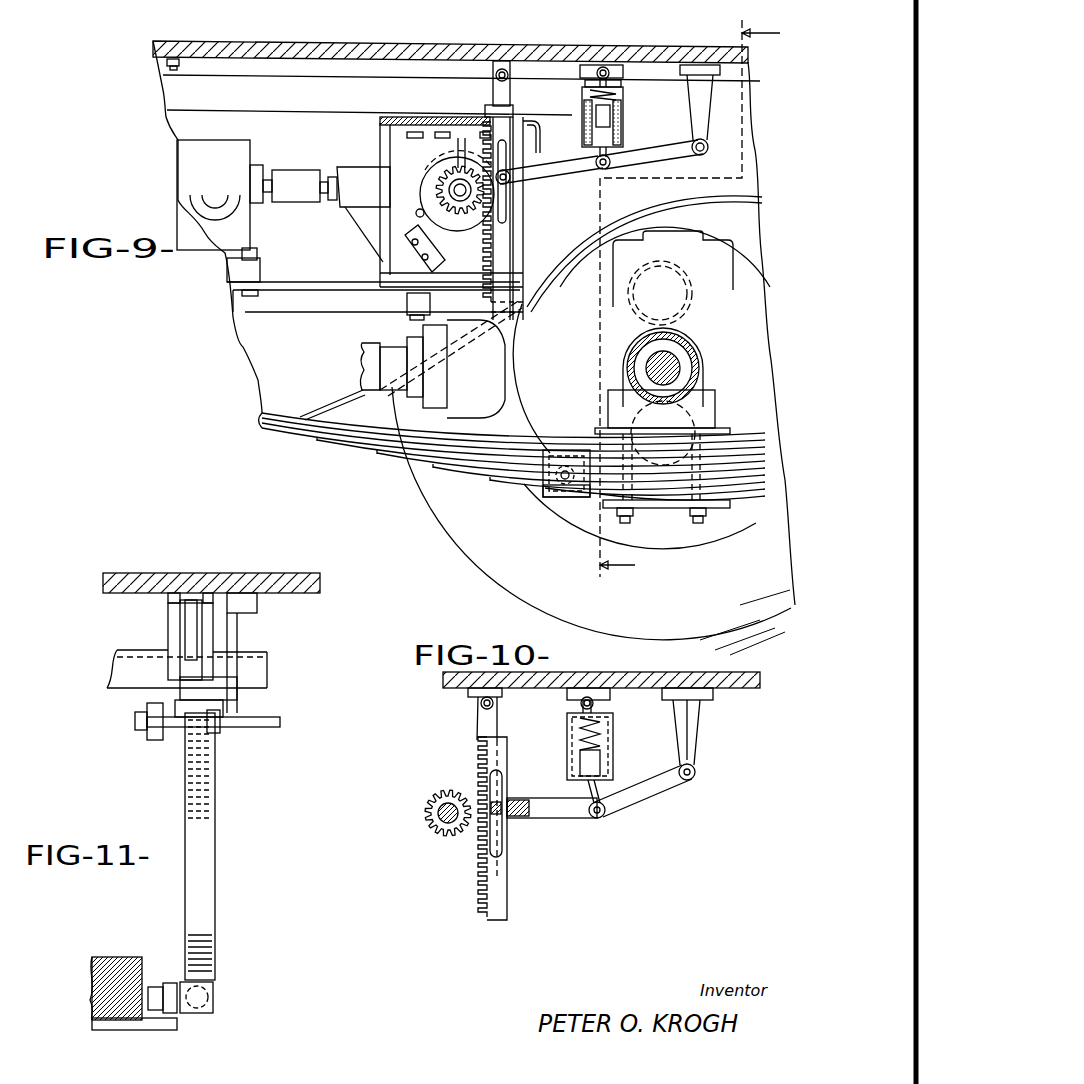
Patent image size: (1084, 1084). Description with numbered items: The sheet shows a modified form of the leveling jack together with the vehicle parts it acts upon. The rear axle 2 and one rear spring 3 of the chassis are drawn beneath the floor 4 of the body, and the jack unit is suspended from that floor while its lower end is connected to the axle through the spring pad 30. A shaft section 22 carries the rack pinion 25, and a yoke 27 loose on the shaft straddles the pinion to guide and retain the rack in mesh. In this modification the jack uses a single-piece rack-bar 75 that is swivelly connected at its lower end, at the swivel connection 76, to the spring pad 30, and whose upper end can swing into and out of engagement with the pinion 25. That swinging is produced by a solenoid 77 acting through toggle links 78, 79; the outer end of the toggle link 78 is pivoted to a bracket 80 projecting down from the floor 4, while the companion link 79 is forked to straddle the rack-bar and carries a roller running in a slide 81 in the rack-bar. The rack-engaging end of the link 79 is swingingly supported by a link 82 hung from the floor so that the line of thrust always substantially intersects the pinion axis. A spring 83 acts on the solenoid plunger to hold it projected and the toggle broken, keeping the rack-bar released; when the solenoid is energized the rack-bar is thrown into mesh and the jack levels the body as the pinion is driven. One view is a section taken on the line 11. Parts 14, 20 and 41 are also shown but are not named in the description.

In FIG. 9, the rear axle 2 is at (680, 365).
In FIG. 9, the rear spring 3 is at (735, 438).
In FIG. 9, the floor 4 is at (378, 50).
In FIG. 10, the floor 4 is at (660, 676).
In FIG. 11, the floor 4 is at (133, 580).
In FIG. 9, the section line 11 is at (690, 301).
In FIG. 9, the motor bracket 14 is at (397, 218).
In FIG. 9, the gear housing 20 is at (525, 140).
In FIG. 9, the shaft section 22 is at (455, 190).
In FIG. 10, the shaft section 22 is at (438, 810).
In FIG. 11, the shaft section 22 is at (280, 724).
In FIG. 9, the rack pinion 25 is at (446, 170).
In FIG. 10, the rack pinion 25 is at (426, 828).
In FIG. 9, the yoke 27 is at (570, 450).
In FIG. 9, the spring pad 30 is at (585, 88).
In FIG. 11, the spring pad 30 is at (152, 1030).
In FIG. 9, the lever arm 41 is at (446, 228).
In FIG. 9, the rack-bar 75 is at (507, 360).
In FIG. 10, the rack-bar 75 is at (507, 894).
In FIG. 11, the rack-bar 75 is at (215, 870).
In FIG. 9, the swivel connection 76 is at (553, 497).
In FIG. 11, the swivel connection 76 is at (205, 1000).
In FIG. 9, the solenoid 77 is at (624, 128).
In FIG. 10, the solenoid 77 is at (613, 762).
In FIG. 11, the solenoid 77 is at (168, 628).
In FIG. 9, the toggle link 78 is at (668, 157).
In FIG. 10, the toggle link 78 is at (658, 793).
In FIG. 11, the toggle link 78 is at (223, 685).
In FIG. 9, the toggle link 79 is at (558, 178).
In FIG. 10, the toggle link 79 is at (556, 820).
In FIG. 11, the toggle link 79 is at (215, 730).
In FIG. 9, the bracket 80 is at (710, 122).
In FIG. 10, the bracket 80 is at (702, 722).
In FIG. 11, the bracket 80 is at (185, 620).
In FIG. 9, the slide 81 is at (505, 218).
In FIG. 10, the slide 81 is at (500, 850).
In FIG. 9, the link 82 is at (493, 90).
In FIG. 10, the link 82 is at (498, 725).
In FIG. 11, the link 82 is at (237, 630).
In FIG. 9, the spring 83 is at (624, 92).
In FIG. 10, the spring 83 is at (612, 728).